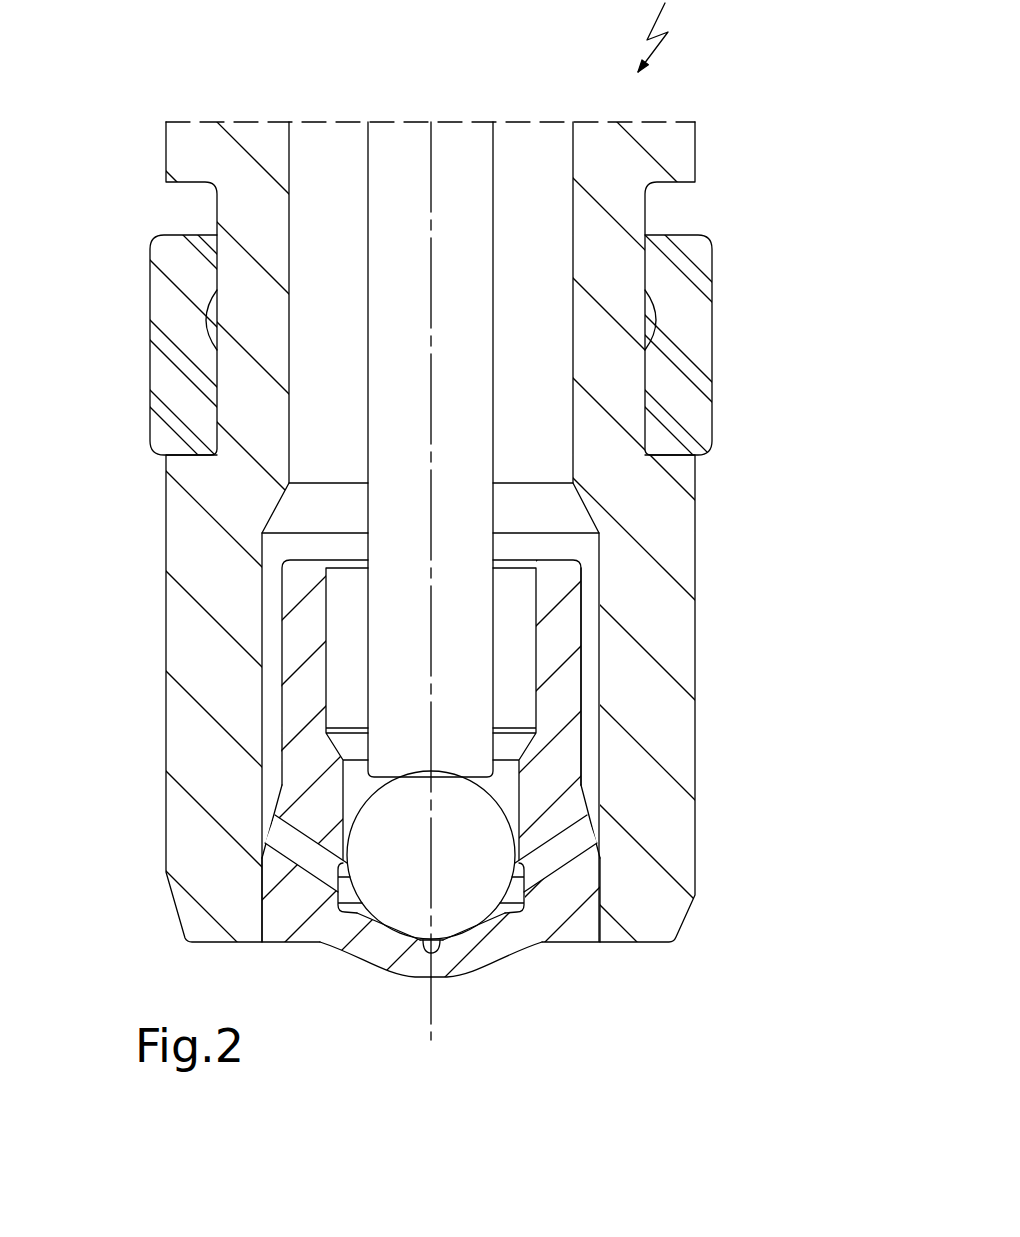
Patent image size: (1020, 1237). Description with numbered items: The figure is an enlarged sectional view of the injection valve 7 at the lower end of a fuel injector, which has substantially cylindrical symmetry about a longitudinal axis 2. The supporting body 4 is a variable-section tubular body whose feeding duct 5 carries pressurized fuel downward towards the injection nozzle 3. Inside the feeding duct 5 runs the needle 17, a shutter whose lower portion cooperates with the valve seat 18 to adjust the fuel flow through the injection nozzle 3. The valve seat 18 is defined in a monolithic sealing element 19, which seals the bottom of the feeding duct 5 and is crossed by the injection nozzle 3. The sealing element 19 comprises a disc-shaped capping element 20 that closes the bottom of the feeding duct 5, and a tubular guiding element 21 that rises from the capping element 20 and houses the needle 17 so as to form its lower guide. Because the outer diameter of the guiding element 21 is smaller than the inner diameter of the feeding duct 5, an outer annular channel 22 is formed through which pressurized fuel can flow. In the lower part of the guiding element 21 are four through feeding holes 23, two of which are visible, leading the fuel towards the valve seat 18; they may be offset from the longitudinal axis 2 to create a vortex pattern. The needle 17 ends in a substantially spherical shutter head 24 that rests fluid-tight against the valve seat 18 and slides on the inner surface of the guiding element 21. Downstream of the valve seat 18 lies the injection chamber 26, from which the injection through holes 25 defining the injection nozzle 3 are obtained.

The longitudinal axis 2 is at (440, 1027).
The injection nozzle 3 is at (400, 1007).
The supporting body 4 is at (663, 630).
The feeding duct 5 is at (318, 219).
The injection valve 7 is at (565, 967).
The needle 17 is at (408, 160).
The valve seat 18 is at (392, 922).
The sealing element 19 is at (587, 593).
The capping element 20 is at (278, 910).
The guiding element 21 is at (297, 632).
The outer annular channel 22 is at (270, 698).
The feeding holes 23 is at (297, 847).
The shutter head 24 is at (478, 815).
The injection through holes 25 is at (478, 962).
The injection chamber 26 is at (430, 947).